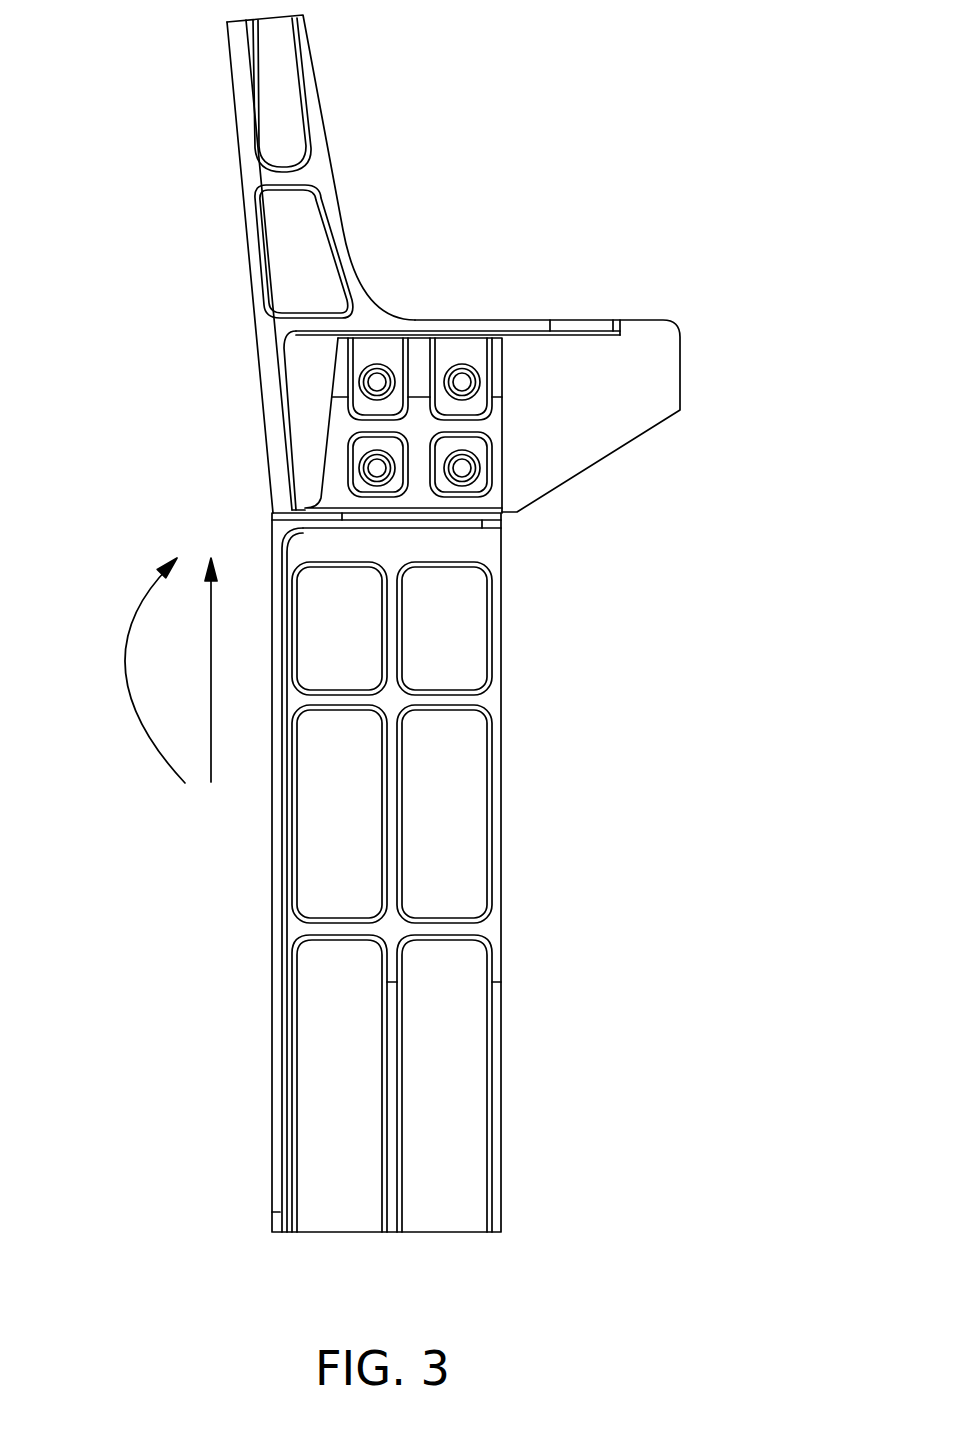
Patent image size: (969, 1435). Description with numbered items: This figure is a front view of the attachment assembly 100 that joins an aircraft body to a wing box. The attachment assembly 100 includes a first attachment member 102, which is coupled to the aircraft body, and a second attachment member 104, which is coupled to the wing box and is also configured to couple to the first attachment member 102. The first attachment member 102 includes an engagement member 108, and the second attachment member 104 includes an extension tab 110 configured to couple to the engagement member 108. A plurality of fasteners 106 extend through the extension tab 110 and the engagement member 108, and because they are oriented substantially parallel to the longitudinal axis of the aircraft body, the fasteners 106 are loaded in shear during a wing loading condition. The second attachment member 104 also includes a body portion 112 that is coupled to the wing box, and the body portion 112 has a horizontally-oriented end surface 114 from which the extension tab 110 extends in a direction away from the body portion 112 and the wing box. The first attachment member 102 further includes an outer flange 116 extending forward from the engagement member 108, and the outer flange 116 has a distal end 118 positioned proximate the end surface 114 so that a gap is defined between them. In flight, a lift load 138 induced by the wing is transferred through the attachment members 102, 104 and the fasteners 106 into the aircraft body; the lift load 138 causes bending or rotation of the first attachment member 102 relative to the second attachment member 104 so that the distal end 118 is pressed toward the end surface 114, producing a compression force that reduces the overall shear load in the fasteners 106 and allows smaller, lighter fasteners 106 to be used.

The attachment assembly 100 is at (660, 212).
The first attachment member 102 is at (172, 191).
The second attachment member 104 is at (530, 861).
The fasteners 106 is at (383, 378).
The engagement member 108 is at (626, 405).
The extension tab 110 is at (495, 460).
The body portion 112 is at (440, 761).
The end surface 114 is at (425, 517).
The outer flange 116 is at (268, 440).
The distal end 118 is at (248, 488).
The lift load 138 is at (211, 733).